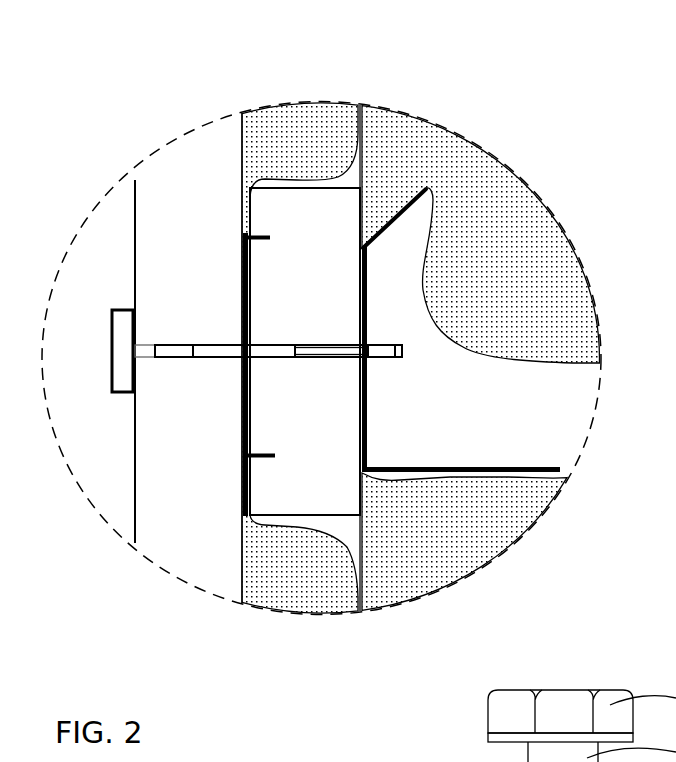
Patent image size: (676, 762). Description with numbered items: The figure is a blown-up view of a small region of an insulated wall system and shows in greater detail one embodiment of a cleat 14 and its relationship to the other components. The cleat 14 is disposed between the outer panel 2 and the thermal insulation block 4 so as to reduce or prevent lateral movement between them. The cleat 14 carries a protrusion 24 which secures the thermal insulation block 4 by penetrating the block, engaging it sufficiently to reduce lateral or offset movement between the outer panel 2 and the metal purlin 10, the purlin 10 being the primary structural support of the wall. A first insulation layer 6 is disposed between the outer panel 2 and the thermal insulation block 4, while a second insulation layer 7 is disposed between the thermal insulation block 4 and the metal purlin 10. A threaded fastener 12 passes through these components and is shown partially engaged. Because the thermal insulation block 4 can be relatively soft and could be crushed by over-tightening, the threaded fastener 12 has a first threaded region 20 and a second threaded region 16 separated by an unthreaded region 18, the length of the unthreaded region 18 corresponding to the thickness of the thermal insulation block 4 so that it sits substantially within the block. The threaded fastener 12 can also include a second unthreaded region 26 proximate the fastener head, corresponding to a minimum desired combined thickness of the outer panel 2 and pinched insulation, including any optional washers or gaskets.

The outer panel 2 is at (182, 277).
The thermal insulation block 4 is at (322, 222).
The first insulation layer 6 is at (321, 612).
The second insulation layer 7 is at (433, 577).
The metal purlin 10 is at (400, 213).
The threaded fastener 12 is at (111, 342).
The cleat 14 is at (237, 270).
The second threaded region 16 is at (183, 358).
The unthreaded region 18 is at (312, 352).
The first threaded region 20 is at (400, 357).
The protrusion 24 is at (262, 233).
The second unthreaded region 26 is at (144, 358).